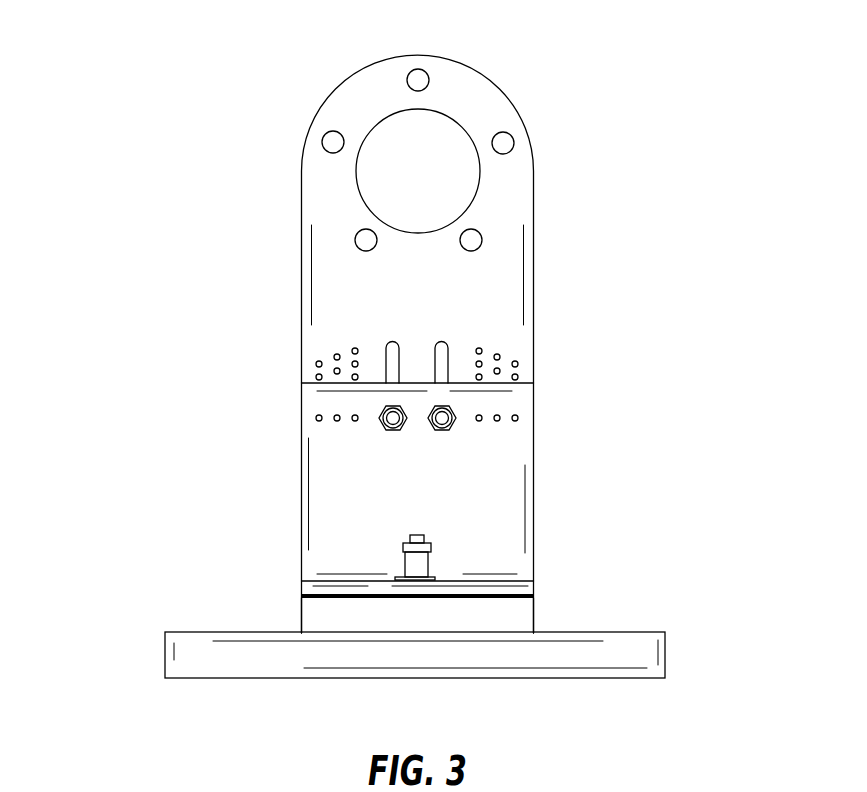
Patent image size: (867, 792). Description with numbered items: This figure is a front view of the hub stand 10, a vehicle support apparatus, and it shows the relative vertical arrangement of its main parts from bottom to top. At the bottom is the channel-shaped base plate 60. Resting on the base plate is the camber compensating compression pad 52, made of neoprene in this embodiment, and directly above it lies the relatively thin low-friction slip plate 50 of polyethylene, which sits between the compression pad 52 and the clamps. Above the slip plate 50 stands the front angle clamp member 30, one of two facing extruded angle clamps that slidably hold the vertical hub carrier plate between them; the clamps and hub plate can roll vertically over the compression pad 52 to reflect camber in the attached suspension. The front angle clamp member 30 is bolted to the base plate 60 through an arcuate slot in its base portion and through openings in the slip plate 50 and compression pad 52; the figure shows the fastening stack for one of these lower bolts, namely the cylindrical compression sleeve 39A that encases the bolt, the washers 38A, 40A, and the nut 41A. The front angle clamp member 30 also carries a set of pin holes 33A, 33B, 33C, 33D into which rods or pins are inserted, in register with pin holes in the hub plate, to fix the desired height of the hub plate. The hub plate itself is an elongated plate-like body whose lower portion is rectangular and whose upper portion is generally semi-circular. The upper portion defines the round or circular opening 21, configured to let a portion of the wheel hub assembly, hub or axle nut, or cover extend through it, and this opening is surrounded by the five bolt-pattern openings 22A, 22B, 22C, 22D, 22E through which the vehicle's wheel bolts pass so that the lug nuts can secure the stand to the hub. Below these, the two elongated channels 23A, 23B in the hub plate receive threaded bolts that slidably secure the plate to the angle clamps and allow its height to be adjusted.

The hub stand 10 is at (150, 63).
The circular opening 21 is at (432, 172).
The opening 22A is at (418, 80).
The opening 22B is at (503, 143).
The opening 22C is at (471, 240).
The opening 22D is at (366, 240).
The opening 22E is at (333, 142).
The elongated channel 23A is at (393, 342).
The elongated channel 23B is at (441, 345).
The front angle clamp member 30 is at (500, 458).
The pin hole / bolt 33A is at (319, 418).
The pin hole / bolt 33B is at (355, 418).
The pin hole 33C is at (497, 418).
The pin hole 33D is at (515, 418).
The washer 38A is at (435, 578).
The compression sleeve 39A is at (412, 568).
The washer 40A is at (430, 550).
The nut 41A is at (432, 543).
The slip plate 50 is at (302, 596).
The compression pad 52 is at (310, 614).
The base plate 60 is at (637, 640).